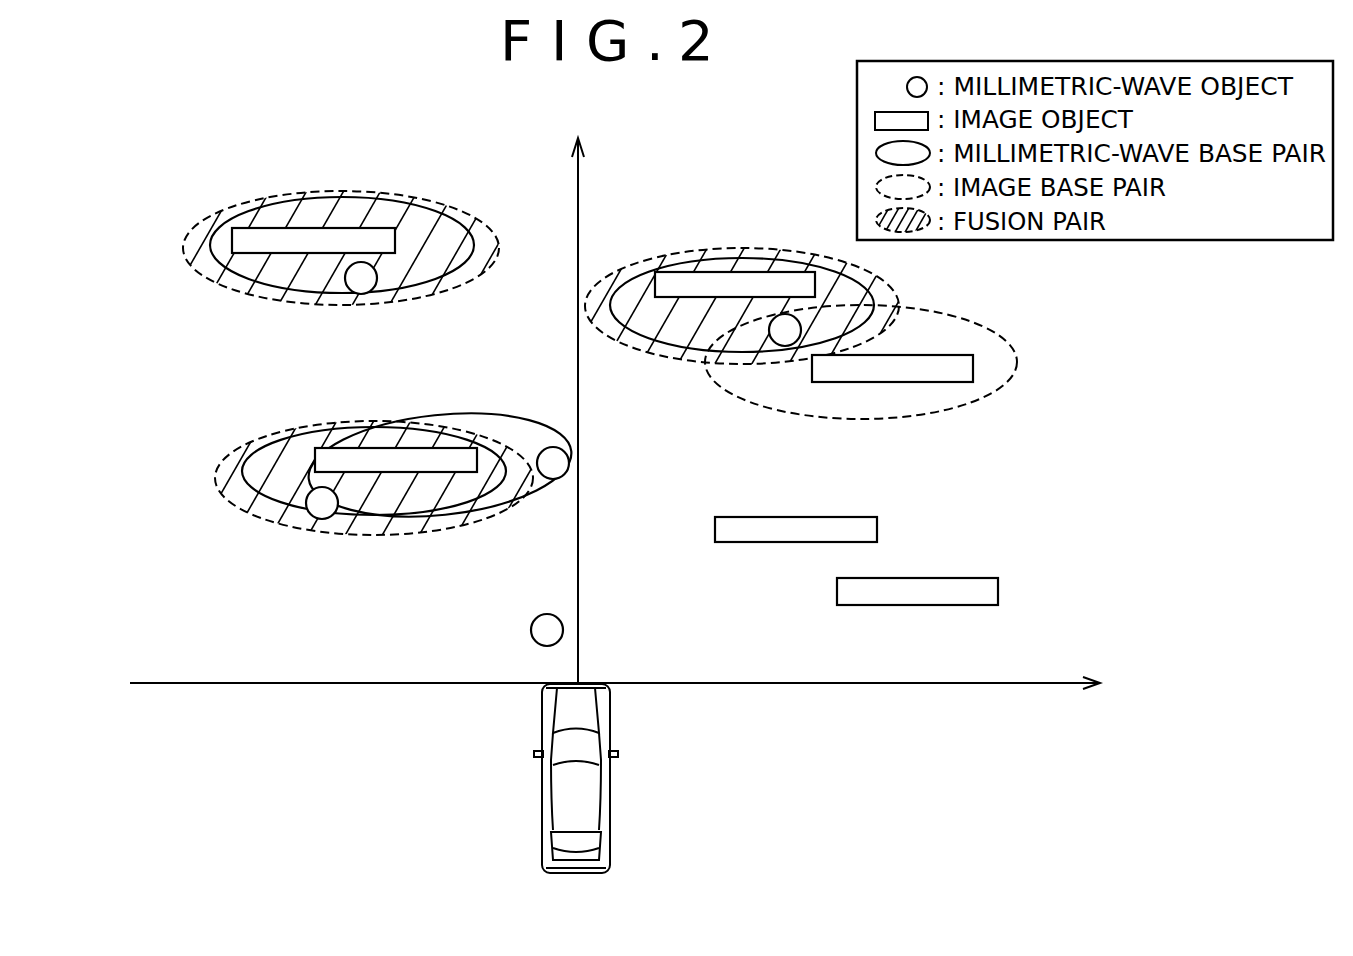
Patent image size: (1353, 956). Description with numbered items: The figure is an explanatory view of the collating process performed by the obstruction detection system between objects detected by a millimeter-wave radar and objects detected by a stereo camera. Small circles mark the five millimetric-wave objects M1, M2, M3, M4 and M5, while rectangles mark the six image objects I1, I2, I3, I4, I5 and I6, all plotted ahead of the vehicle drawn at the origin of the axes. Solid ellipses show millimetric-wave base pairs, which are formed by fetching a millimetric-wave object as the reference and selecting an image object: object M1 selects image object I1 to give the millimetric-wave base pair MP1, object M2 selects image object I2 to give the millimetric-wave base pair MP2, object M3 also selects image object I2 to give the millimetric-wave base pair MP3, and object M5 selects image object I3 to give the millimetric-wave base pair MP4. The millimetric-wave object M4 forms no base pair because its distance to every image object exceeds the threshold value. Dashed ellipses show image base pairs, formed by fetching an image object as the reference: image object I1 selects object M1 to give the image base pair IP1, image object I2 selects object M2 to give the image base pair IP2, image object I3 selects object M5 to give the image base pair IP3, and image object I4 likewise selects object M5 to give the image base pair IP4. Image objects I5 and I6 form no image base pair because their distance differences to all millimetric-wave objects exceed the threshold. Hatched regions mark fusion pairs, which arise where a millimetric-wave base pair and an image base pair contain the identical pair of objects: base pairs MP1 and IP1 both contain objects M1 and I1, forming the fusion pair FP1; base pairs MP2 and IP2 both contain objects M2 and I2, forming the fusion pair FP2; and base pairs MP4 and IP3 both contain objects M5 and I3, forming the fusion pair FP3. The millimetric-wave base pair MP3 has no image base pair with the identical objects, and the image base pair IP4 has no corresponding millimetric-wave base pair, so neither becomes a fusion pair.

The fusion pair FP1 is at (242, 197).
The image base pair IP1 is at (440, 195).
The millimetric-wave base pair MP1 is at (293, 300).
The image object I1 is at (352, 228).
The millimetric-wave object M1 is at (371, 292).
The fusion pair FP2 is at (247, 441).
The image base pair IP2 is at (327, 422).
The millimetric-wave base pair MP2 is at (281, 510).
The millimetric-wave base pair MP3 is at (526, 432).
The image object I2 is at (445, 448).
The millimetric-wave object M2 is at (333, 517).
The millimetric-wave object M3 is at (545, 480).
The fusion pair FP3 is at (780, 249).
The image base pair IP3 is at (618, 253).
The image base pair IP4 is at (982, 322).
The millimetric-wave base pair MP4 is at (641, 336).
The image object I3 is at (712, 272).
The millimetric-wave object M5 is at (782, 346).
The image object I4 is at (880, 382).
The image object I5 is at (765, 542).
The image object I6 is at (885, 605).
The millimetric-wave object M4 is at (534, 632).